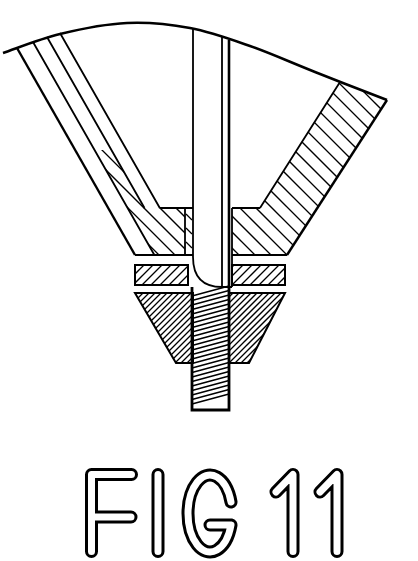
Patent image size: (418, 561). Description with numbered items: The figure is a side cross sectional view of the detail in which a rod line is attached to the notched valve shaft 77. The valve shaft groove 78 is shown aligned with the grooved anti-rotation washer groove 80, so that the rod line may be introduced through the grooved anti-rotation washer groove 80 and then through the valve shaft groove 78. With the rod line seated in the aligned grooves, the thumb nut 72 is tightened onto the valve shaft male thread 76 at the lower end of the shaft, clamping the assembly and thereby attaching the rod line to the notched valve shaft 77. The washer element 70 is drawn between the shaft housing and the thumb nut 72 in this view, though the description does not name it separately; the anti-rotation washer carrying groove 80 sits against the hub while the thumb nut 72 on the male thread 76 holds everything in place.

The ring / washer 70 is at (287, 276).
The thumb nut 72 is at (265, 330).
The valve shaft male thread 76 is at (230, 384).
The notched valve shaft 77 is at (224, 143).
The valve shaft groove 78 is at (126, 247).
The grooved anti-rotation washer groove 80 is at (182, 254).